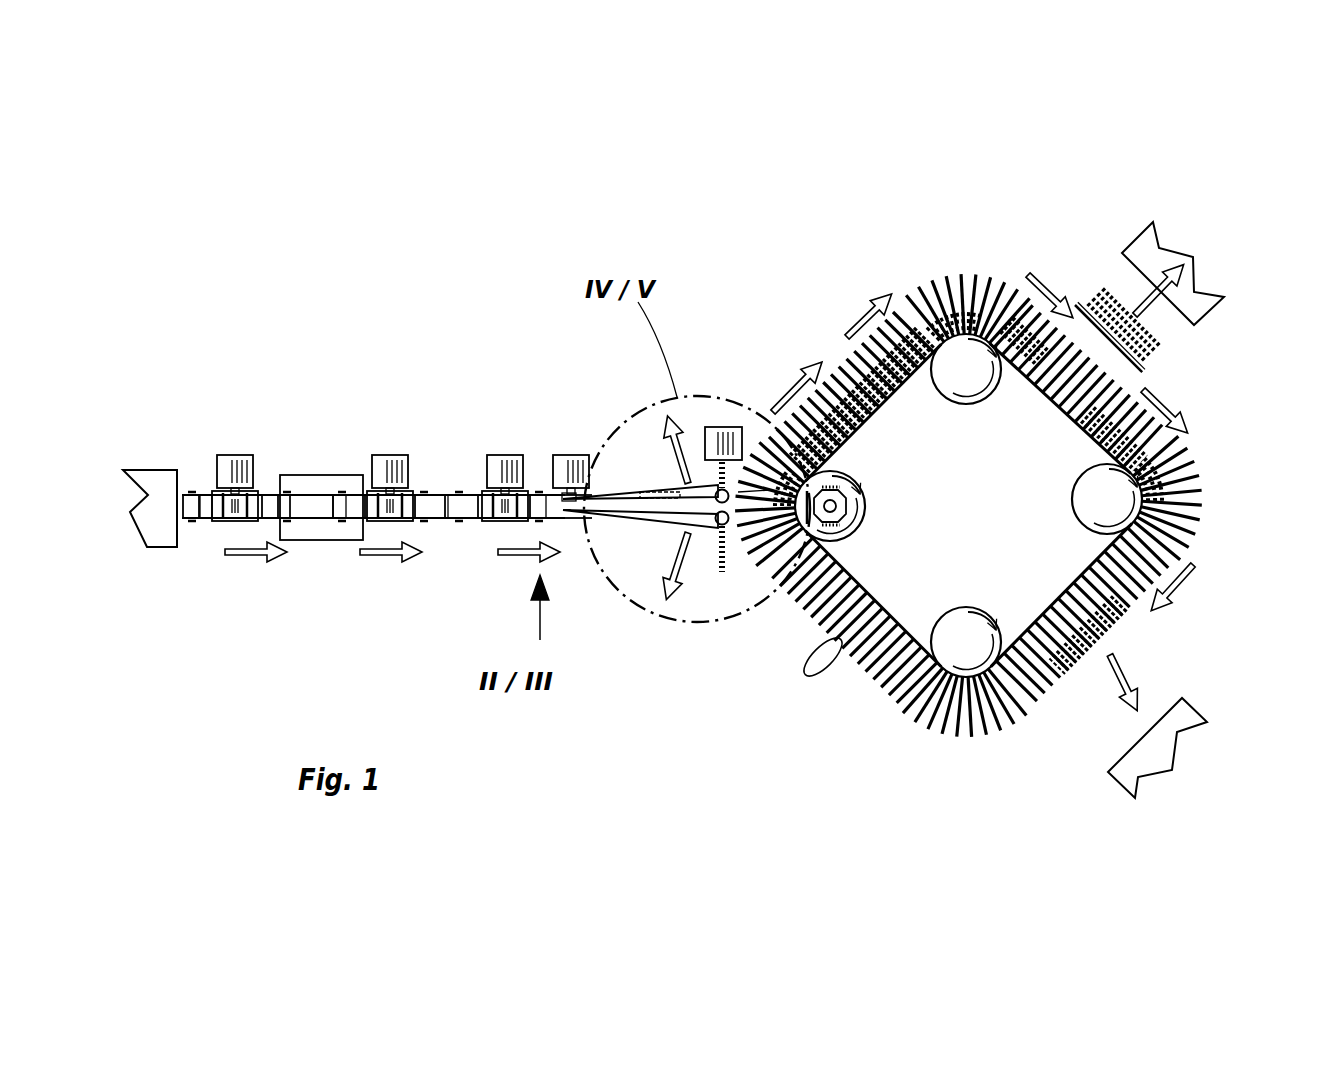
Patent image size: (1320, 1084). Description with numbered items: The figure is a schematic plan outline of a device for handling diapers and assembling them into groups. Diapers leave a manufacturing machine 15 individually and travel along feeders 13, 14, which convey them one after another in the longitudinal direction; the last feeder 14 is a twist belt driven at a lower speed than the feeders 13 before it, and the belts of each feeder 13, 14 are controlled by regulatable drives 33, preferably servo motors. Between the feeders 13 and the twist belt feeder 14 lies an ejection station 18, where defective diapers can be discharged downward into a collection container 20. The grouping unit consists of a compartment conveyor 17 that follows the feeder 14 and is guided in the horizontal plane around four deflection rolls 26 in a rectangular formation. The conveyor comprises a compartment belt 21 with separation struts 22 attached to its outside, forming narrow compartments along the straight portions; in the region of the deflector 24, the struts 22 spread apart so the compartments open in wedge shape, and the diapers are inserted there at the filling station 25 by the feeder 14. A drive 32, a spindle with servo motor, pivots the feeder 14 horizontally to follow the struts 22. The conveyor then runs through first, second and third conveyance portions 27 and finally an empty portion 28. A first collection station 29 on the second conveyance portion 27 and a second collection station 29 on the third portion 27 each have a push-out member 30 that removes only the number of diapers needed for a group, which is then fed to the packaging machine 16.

The feeders 13 is at (202, 533).
The feeder 14 is at (643, 482).
The manufacturing machine 15 is at (142, 455).
The packaging machine 16 is at (1207, 240).
The compartment conveyor 17 is at (974, 486).
The ejection station 18 is at (308, 470).
The collection container 20 is at (336, 476).
The compartment belt 21 is at (968, 513).
The separation struts 22 is at (830, 641).
The deflector 24 is at (860, 471).
The filling station 25 is at (738, 583).
The deflection rolls 26 is at (968, 385).
The conveyance portions 27 is at (819, 349).
The empty portion 28 is at (860, 705).
The collection stations 29 is at (1080, 275).
The push-out member 30 is at (1143, 373).
The drive 32 is at (714, 435).
The drives 33 is at (230, 455).